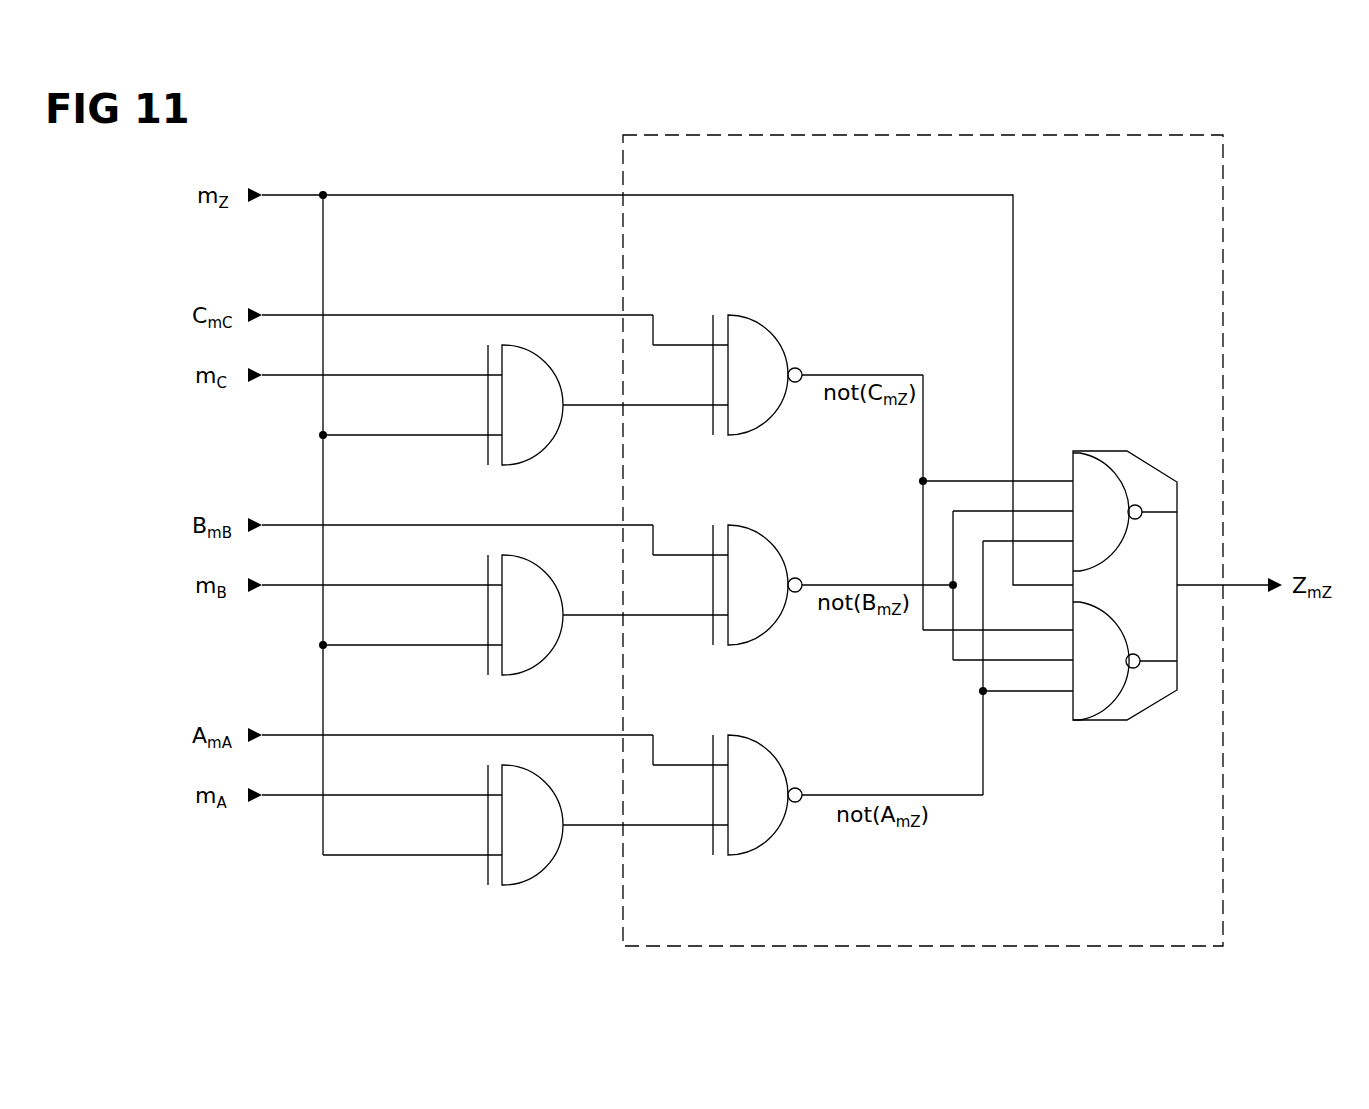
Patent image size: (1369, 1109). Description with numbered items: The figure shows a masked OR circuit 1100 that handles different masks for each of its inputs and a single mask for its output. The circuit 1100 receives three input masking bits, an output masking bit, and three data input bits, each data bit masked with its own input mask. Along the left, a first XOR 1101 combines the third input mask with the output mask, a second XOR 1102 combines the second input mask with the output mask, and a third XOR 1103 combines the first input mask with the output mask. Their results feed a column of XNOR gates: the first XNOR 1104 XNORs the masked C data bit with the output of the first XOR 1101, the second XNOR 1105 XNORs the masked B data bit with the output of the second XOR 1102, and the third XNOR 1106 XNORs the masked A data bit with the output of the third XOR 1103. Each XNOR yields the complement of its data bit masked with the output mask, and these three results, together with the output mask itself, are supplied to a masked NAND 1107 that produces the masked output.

The masked OR circuit 1100 is at (1268, 140).
The first XOR 1101 is at (585, 350).
The second XOR 1102 is at (585, 560).
The third XOR 1103 is at (585, 770).
The first XNOR 1104 is at (815, 322).
The second XNOR 1105 is at (815, 532).
The third XNOR 1106 is at (815, 742).
The masked NAND 1107 is at (1150, 703).